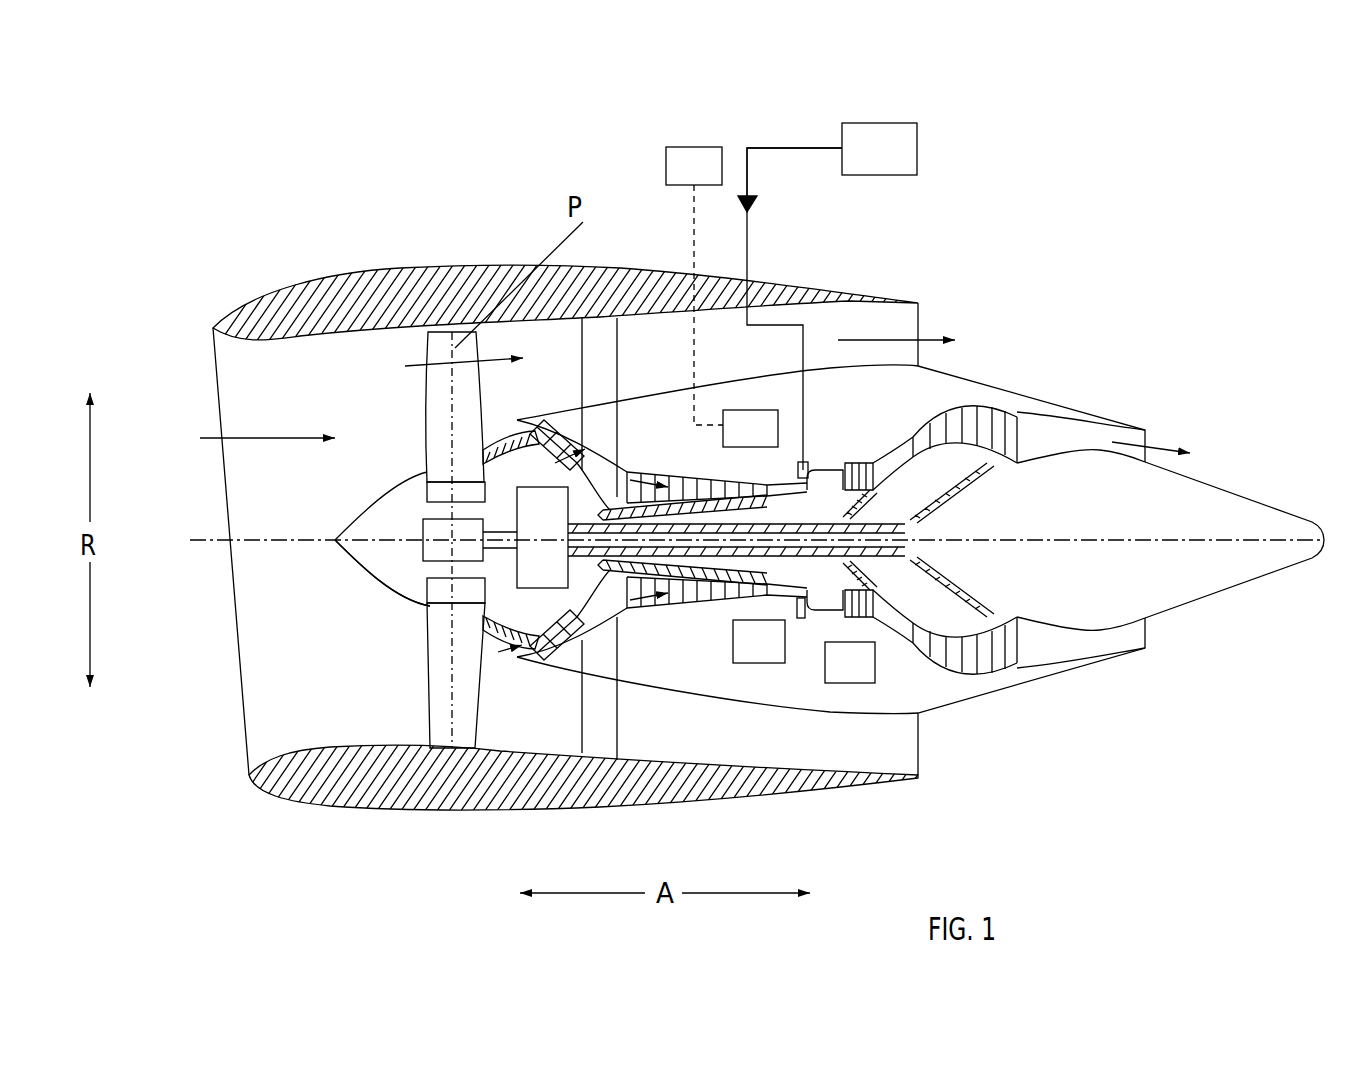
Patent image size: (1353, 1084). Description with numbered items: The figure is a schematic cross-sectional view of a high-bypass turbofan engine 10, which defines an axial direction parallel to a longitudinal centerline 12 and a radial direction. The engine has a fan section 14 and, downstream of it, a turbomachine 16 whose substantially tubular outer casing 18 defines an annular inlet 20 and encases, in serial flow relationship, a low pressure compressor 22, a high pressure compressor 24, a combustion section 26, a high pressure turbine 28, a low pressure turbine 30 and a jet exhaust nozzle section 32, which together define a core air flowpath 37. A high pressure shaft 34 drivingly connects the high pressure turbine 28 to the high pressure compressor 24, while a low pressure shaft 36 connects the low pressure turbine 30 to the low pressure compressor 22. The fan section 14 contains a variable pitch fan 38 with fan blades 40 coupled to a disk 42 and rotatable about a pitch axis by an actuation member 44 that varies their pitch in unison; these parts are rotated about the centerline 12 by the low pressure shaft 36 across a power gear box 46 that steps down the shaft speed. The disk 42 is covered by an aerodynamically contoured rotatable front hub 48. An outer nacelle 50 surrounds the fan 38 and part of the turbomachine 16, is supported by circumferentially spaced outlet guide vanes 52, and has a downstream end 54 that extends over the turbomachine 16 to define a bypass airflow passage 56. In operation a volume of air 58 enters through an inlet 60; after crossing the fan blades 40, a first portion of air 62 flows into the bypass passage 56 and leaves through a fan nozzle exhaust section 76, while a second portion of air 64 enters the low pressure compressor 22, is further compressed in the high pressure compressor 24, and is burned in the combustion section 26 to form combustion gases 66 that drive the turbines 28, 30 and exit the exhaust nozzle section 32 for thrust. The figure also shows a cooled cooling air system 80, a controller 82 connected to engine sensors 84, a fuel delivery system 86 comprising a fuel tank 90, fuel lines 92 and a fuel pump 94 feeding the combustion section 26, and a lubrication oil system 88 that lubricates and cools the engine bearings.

The turbofan engine 10 is at (1063, 283).
The longitudinal centerline 12 is at (1256, 538).
The fan section 14 is at (470, 235).
The turbomachine 16 is at (789, 426).
The outer casing 18 is at (777, 703).
The annular inlet 20 is at (520, 658).
The low pressure compressor 22 is at (580, 606).
The high pressure compressor 24 is at (648, 597).
The combustion section 26 is at (818, 610).
The high pressure turbine 28 is at (888, 607).
The low pressure turbine 30 is at (1001, 670).
The jet exhaust nozzle section 32 is at (1064, 653).
The high pressure shaft 34 is at (852, 490).
The low pressure shaft 36 is at (955, 493).
The core air flowpath 37 is at (610, 615).
The variable pitch fan 38 is at (392, 590).
The fan blades 40 is at (423, 688).
The disk 42 is at (447, 492).
The actuation member 44 is at (423, 520).
The power gear box 46 is at (557, 513).
The rotatable front hub 48 is at (348, 557).
The outer nacelle 50 is at (472, 815).
The outlet guide vanes 52 is at (617, 347).
The downstream end of the nacelle 54 is at (845, 290).
The bypass airflow passage 56 is at (742, 364).
The volume of air 58 is at (268, 437).
The inlet 60 is at (246, 760).
The first portion of air 62 is at (445, 347).
The second portion of air 64 is at (512, 423).
The combustion gases 66 is at (963, 408).
The fan nozzle exhaust section 76 is at (922, 323).
The cooled cooling air system 80 is at (772, 654).
The controller 82 is at (708, 180).
The engine sensors 84 is at (757, 410).
The fuel delivery system 86 is at (807, 123).
The lubrication oil system 88 is at (877, 665).
The fuel tank 90 is at (892, 162).
The fuel lines 92 is at (748, 232).
The fuel pump 94 is at (757, 200).